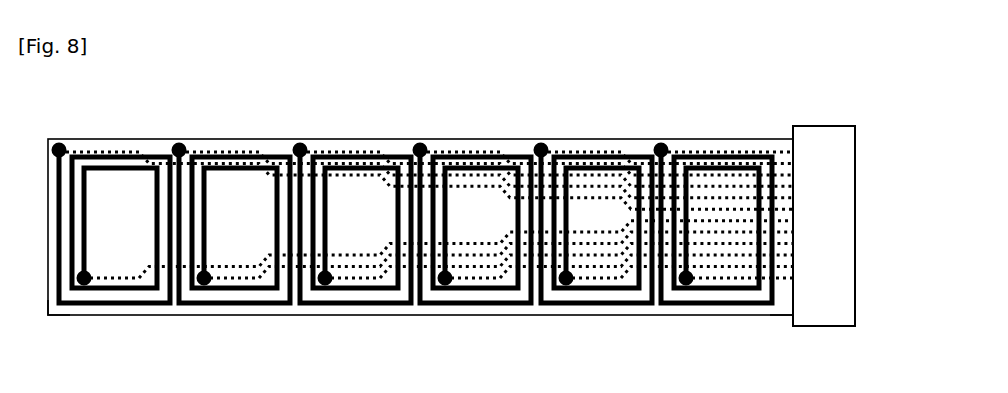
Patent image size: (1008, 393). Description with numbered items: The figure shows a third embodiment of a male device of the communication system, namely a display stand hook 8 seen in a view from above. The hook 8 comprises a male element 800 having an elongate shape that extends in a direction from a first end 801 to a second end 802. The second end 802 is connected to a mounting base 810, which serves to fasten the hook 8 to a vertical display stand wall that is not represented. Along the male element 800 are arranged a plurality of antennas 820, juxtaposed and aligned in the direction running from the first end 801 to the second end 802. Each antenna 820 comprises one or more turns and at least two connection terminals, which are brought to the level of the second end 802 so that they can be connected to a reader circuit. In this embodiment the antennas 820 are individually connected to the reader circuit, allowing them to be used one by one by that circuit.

The hook 8 is at (497, 124).
The male element 800 is at (368, 139).
The first end 801 is at (45, 300).
The second end 802 is at (792, 319).
The mounting base 810 is at (856, 176).
The antennas 820 is at (195, 304).